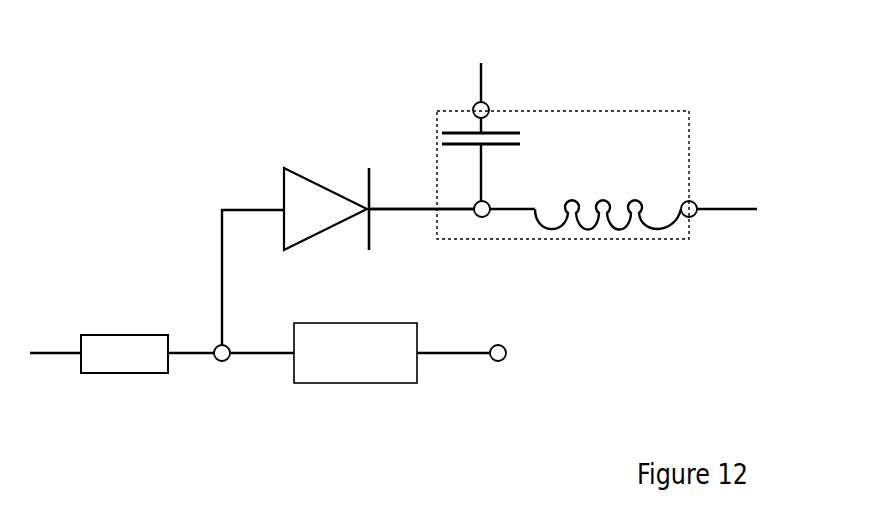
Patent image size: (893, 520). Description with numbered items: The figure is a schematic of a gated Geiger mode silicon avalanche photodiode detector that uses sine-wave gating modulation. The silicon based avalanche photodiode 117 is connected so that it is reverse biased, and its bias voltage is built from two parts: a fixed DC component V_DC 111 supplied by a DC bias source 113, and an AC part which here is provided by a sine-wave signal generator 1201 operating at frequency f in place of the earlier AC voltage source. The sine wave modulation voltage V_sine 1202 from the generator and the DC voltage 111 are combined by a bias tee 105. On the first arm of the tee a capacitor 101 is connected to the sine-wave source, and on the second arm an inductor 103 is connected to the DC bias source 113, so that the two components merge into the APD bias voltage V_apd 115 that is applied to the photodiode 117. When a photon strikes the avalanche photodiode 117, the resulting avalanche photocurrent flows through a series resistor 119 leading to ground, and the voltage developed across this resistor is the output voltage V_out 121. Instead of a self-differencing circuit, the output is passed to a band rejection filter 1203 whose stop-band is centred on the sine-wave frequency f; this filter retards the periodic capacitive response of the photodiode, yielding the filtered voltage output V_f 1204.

The capacitor 101 is at (441, 133).
The inductor 103 is at (619, 238).
The bias tee 105 is at (563, 175).
The DC component V_DC 111 is at (708, 223).
The DC bias source 113 is at (778, 209).
The APD bias node Vapd 115 is at (421, 213).
The avalanche photodiode 117 is at (272, 193).
The resistor 119 is at (122, 380).
The output voltage V_out 121 is at (200, 403).
The sine-wave signal generator 1201 is at (515, 60).
The sine wave modulation voltage V_sine 1202 is at (511, 99).
The band rejection filter 1203 is at (342, 385).
The filtered voltage output V_f 1204 is at (556, 355).